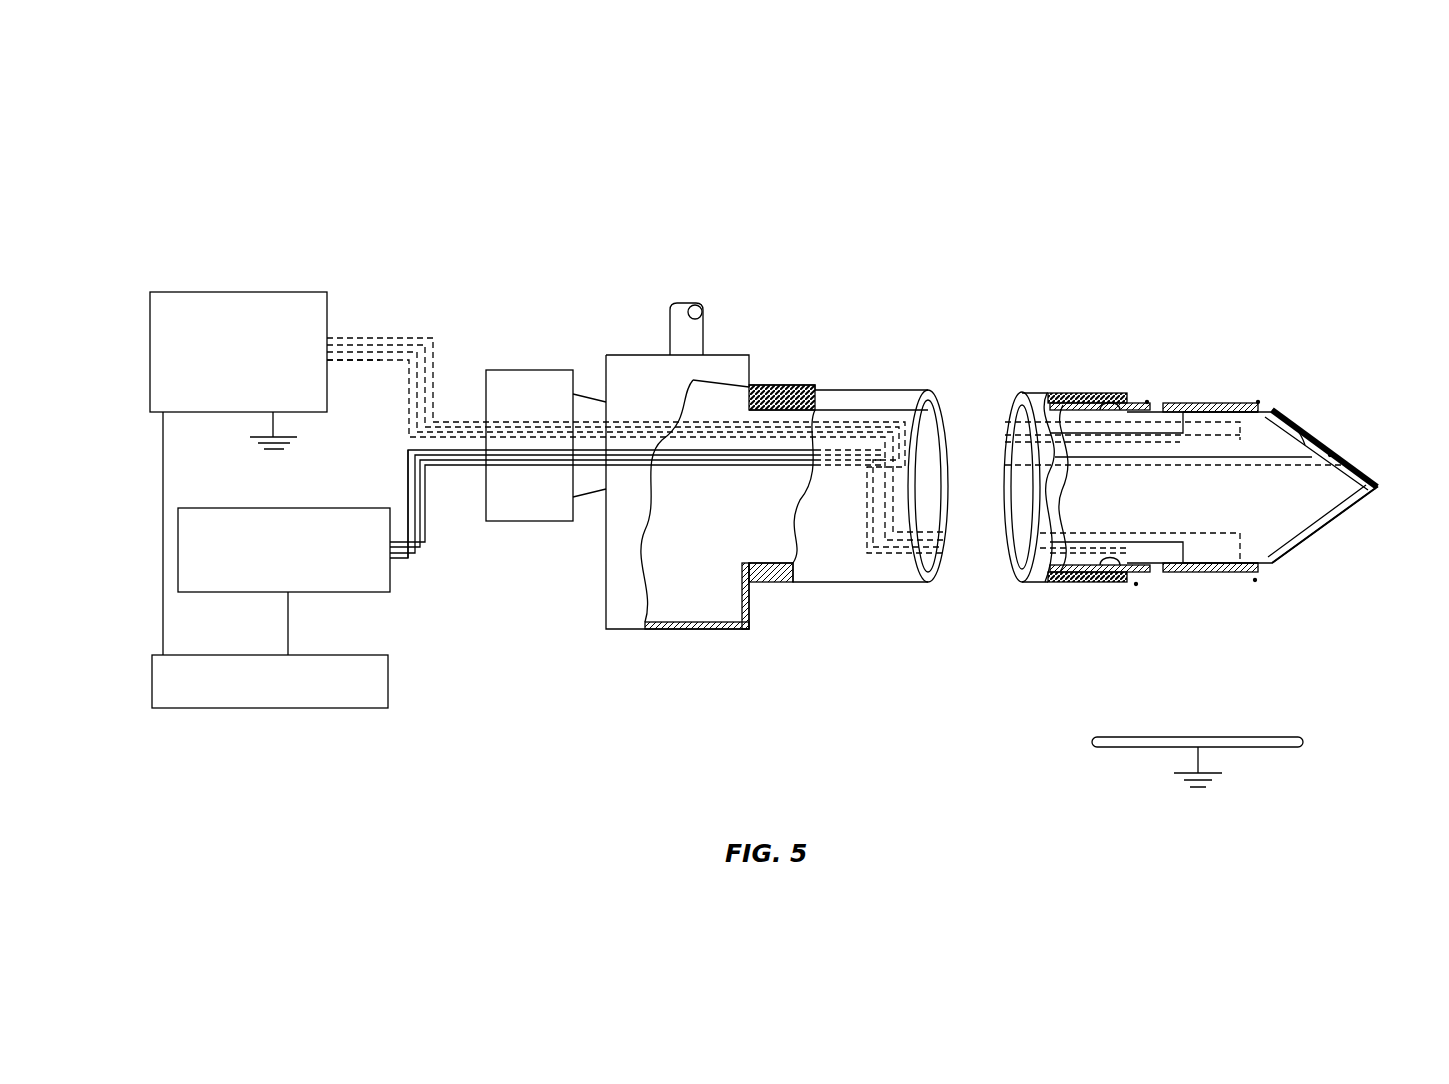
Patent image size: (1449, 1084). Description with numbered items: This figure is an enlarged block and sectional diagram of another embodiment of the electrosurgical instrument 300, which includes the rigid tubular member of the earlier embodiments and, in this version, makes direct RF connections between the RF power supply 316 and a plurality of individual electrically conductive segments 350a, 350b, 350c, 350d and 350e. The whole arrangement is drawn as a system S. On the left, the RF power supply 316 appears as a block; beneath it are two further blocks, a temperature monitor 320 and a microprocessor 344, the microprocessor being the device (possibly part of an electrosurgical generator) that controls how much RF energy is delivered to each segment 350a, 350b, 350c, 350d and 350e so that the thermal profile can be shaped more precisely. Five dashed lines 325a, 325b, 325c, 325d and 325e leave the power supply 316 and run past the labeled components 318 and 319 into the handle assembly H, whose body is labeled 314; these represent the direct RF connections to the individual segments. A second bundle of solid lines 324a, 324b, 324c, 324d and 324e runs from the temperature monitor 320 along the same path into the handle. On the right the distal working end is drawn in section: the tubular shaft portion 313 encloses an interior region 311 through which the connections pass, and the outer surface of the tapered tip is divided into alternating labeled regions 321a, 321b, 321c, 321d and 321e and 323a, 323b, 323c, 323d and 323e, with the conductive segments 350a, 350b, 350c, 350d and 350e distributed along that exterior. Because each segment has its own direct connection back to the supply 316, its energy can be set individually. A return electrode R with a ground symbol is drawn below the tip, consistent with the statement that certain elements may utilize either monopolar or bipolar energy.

The electrosurgical instrument 300 is at (1132, 248).
The lumen 311 is at (1185, 410).
The shaft 313 is at (1088, 393).
The handle 314 is at (700, 629).
The RF power supply 316 is at (183, 292).
The connector 318 is at (545, 370).
The strain relief 319 is at (590, 394).
The temperature monitor 320 is at (252, 508).
The electrode 321a is at (1117, 400).
The electrode 321b is at (1185, 415).
The electrode 321c is at (1290, 422).
The electrode 321d is at (1165, 572).
The electrode 321e is at (1097, 583).
The insulator 323a is at (1050, 395).
The insulator 323b is at (1225, 400).
The insulator 323c is at (1352, 495).
The insulator 323d is at (1220, 580).
The insulator 323e is at (1027, 583).
The thermocouple wire 324a is at (417, 492).
The thermocouple wire 324b is at (420, 510).
The thermocouple wire 324c is at (423, 530).
The thermocouple wire 324d is at (427, 550).
The thermocouple wire bundle 324e is at (416, 568).
The electrode lead 325a is at (345, 352).
The electrode lead 325b is at (362, 345).
The electrode lead 325c is at (380, 340).
The electrode lead 325d is at (397, 362).
The electrode lead 325e is at (345, 367).
The microprocessor 344 is at (255, 655).
The electrically conductive segment 350a is at (1147, 400).
The electrically conductive segment 350b is at (1258, 400).
The electrically conductive segment 350c is at (1330, 455).
The electrically conductive segment 350d is at (1255, 580).
The electrically conductive segment 350e is at (1136, 585).
The handle assembly H is at (718, 330).
The system S is at (250, 727).
The return electrode R is at (1303, 742).